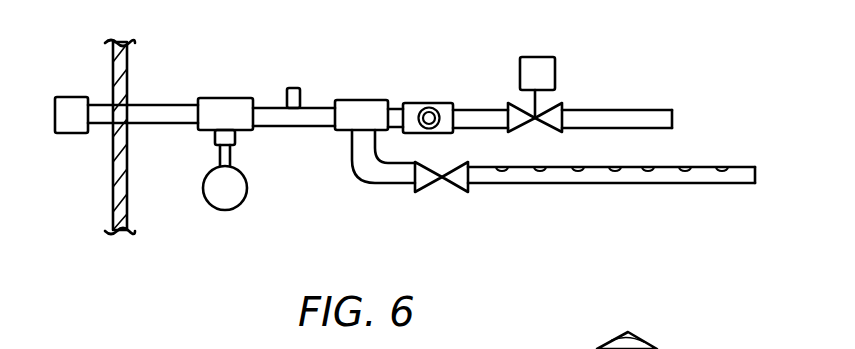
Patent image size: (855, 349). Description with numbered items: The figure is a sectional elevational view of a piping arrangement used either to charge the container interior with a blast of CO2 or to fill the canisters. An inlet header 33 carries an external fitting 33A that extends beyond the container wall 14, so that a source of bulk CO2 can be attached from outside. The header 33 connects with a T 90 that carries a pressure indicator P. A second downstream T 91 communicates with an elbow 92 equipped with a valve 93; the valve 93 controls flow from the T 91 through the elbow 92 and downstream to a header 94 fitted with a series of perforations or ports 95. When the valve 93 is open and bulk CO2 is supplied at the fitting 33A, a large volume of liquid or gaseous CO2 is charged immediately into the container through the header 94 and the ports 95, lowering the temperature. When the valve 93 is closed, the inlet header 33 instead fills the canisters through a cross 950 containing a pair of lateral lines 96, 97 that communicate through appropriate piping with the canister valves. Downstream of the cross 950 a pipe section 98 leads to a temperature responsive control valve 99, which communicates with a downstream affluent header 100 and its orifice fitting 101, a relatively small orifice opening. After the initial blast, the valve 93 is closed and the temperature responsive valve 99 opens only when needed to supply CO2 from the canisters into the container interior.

The container wall 14 is at (128, 53).
The inlet header 33 is at (157, 113).
The external fitting 33A is at (52, 121).
The T 90 is at (233, 113).
The pressure indicator P is at (225, 188).
The second downstream T 91 is at (365, 115).
The cross 950 is at (425, 103).
The lateral line 96 is at (430, 134).
The lateral line 97 is at (429, 118).
The pipe section 98 is at (497, 89).
The temperature responsive control valve 99 is at (547, 70).
The downstream affluent header 100 is at (625, 120).
The orifice fitting 101 is at (672, 118).
The elbow 92 is at (382, 172).
The valve 93 is at (430, 182).
The header 94 is at (602, 180).
The perforations or ports 95 is at (590, 162).